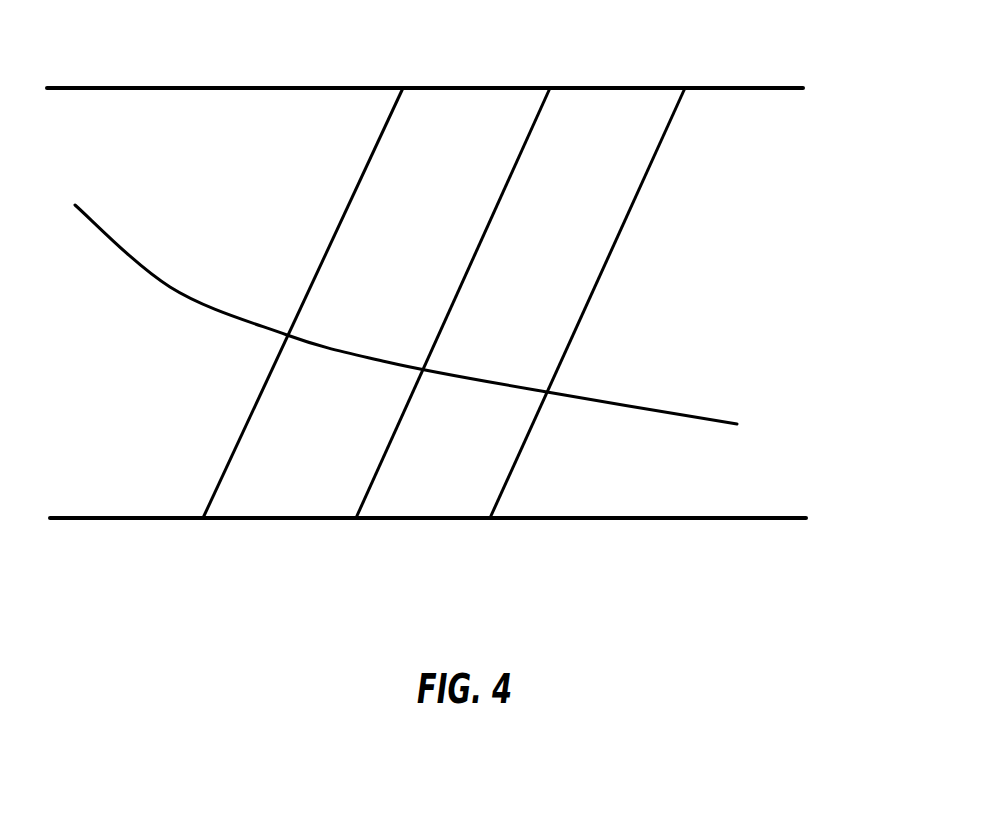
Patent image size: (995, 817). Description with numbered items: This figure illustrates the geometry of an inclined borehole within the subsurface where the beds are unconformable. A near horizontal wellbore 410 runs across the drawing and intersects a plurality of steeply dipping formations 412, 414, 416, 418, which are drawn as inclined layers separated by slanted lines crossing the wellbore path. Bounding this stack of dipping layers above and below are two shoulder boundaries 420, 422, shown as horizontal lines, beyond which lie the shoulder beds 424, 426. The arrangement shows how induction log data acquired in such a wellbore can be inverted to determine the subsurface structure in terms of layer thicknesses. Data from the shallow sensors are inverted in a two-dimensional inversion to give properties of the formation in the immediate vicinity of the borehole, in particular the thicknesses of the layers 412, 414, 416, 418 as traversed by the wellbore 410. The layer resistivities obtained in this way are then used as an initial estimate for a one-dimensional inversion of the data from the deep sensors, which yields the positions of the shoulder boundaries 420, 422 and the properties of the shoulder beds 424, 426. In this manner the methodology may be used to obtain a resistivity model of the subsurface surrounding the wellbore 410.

The near horizontal wellbore 410 is at (454, 314).
The steeply dipping formation 412 is at (228, 193).
The steeply dipping formation 414 is at (451, 194).
The steeply dipping formation 416 is at (589, 194).
The steeply dipping formation 418 is at (743, 194).
The shoulder boundary 420 is at (462, 118).
The shoulder boundary 422 is at (474, 488).
The shoulder bed 424 is at (454, 47).
The shoulder bed 426 is at (458, 587).